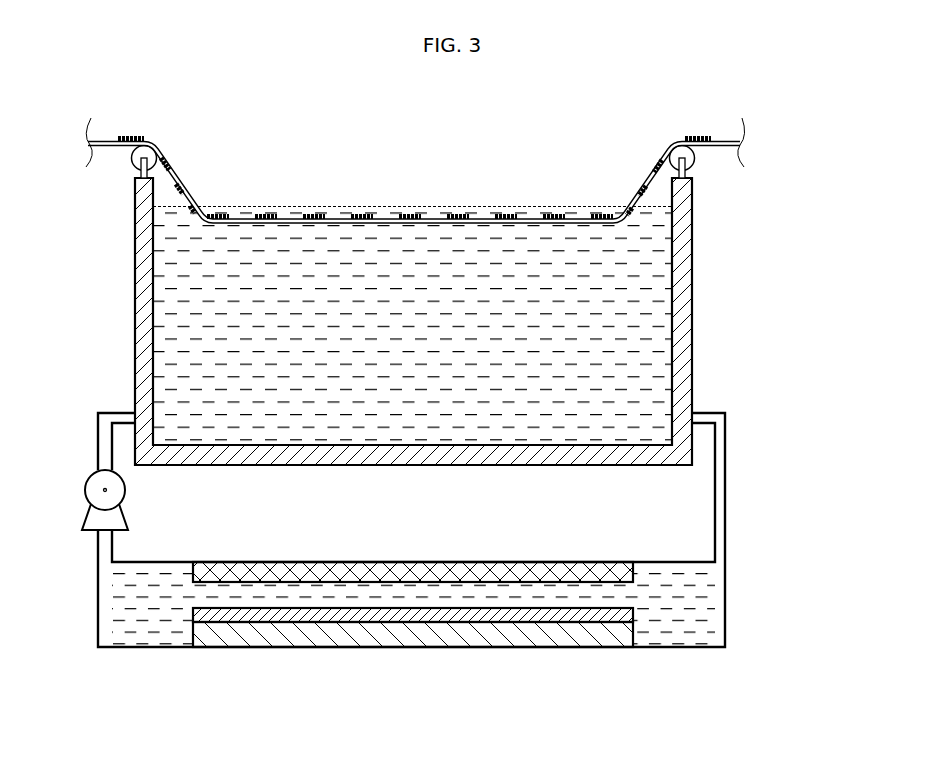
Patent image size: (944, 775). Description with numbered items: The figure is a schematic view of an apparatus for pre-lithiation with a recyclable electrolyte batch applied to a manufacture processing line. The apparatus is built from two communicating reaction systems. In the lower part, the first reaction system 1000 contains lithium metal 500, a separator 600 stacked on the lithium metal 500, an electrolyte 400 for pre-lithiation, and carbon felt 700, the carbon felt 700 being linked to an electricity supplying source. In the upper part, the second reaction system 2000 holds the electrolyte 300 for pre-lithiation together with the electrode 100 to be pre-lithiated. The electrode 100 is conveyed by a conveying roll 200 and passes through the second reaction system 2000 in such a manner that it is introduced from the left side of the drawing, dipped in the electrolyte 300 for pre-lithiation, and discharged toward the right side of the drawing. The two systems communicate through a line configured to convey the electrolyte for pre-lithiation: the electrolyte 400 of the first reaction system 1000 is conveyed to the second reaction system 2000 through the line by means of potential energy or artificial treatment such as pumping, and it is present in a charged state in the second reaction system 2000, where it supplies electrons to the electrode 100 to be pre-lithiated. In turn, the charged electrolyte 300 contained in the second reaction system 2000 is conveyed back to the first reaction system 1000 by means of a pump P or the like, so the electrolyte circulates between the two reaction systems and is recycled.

The electrode to be pre-lithiated 100 is at (636, 188).
The conveying roll 200 is at (673, 141).
The electrolyte for pre-lithiation 300 is at (449, 326).
The electrolyte for pre-lithiation 400 is at (677, 637).
The lithium metal 500 is at (551, 632).
The separator 600 is at (489, 613).
The carbon felt 700 is at (550, 570).
The Reaction System 1 1000 is at (442, 553).
The Reaction System 2 2000 is at (480, 304).
The pump P is at (126, 490).